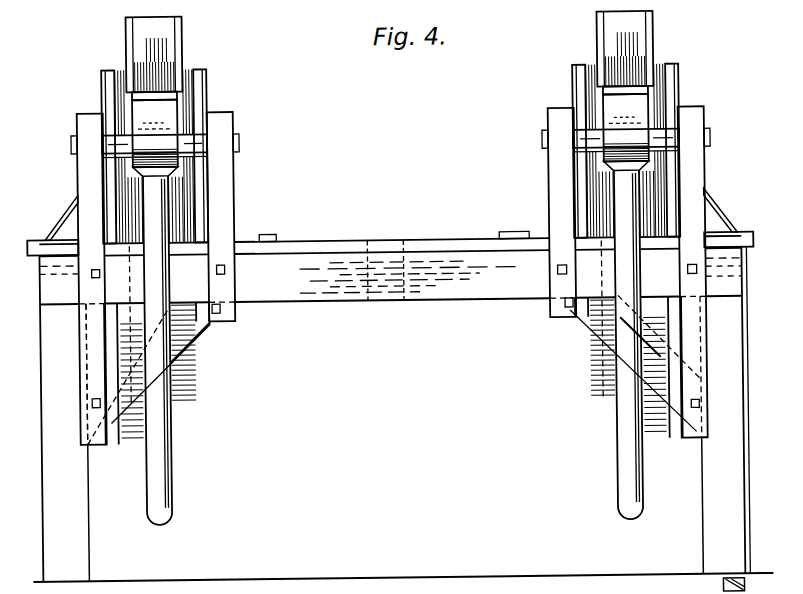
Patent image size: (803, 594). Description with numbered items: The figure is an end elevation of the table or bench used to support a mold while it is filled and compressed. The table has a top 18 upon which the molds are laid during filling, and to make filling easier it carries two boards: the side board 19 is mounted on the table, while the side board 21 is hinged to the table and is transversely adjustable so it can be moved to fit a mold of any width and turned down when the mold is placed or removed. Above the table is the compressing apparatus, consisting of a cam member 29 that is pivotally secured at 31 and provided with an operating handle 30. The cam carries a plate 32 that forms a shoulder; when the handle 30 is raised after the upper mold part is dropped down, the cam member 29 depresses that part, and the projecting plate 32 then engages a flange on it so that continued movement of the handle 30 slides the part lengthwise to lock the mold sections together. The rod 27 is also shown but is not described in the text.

The table top 18 is at (320, 240).
The side board 19 is at (201, 106).
The side board 21 is at (104, 77).
The plunger rod 27 is at (130, 39).
The cam member 29 is at (169, 111).
The operating handle 30 is at (171, 450).
The pivot 31 is at (202, 141).
The plate 32 is at (170, 88).